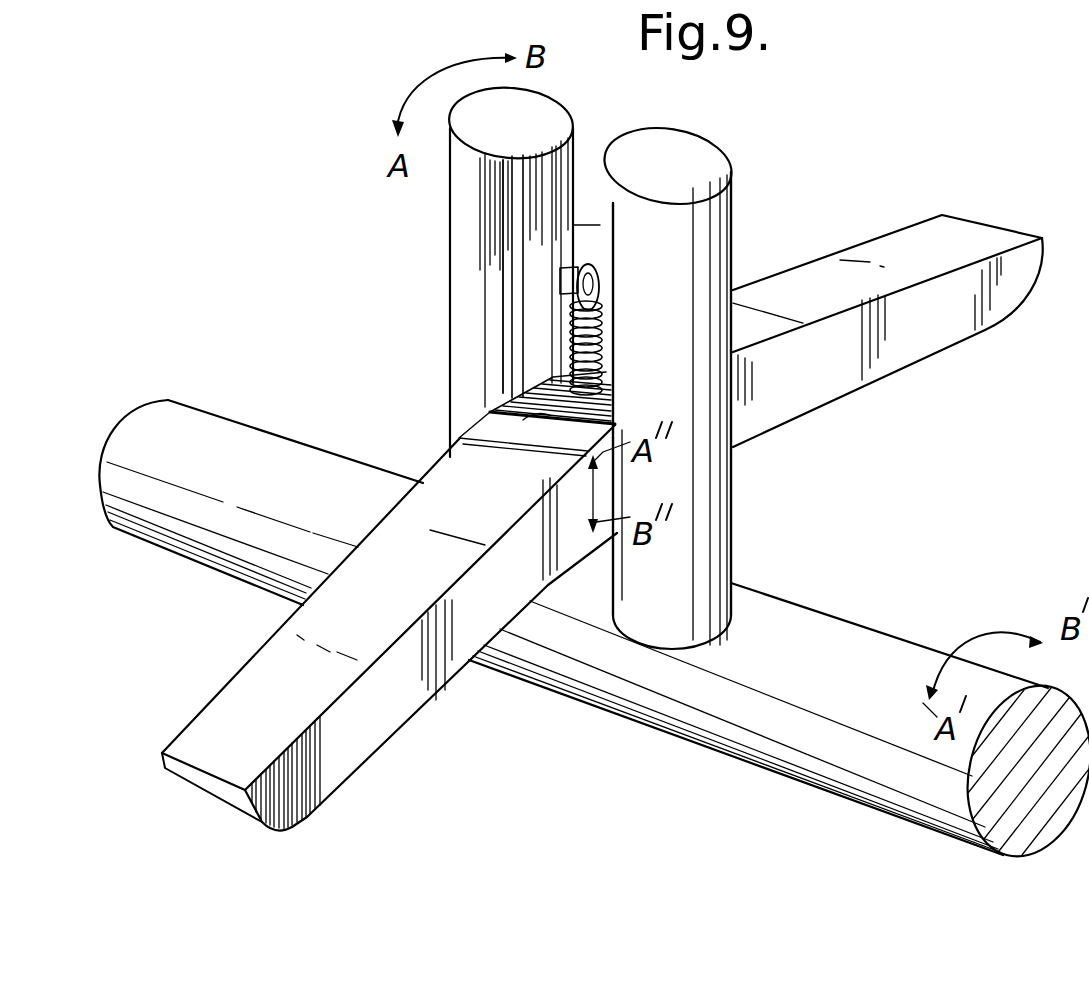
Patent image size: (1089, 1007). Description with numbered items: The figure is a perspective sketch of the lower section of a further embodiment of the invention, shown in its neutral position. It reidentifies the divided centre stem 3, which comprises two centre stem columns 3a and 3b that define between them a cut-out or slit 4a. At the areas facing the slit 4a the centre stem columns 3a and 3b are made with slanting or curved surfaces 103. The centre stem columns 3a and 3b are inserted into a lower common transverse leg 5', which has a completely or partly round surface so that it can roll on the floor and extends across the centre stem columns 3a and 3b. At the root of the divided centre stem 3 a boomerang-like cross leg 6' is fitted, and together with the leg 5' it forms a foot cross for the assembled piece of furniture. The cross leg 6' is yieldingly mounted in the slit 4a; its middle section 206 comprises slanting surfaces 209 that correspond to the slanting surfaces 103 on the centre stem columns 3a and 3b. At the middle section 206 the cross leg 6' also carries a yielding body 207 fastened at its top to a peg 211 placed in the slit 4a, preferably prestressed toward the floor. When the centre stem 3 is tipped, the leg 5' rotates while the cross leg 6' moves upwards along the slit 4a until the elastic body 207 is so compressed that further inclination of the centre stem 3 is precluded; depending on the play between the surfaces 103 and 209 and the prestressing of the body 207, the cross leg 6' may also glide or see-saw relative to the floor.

The divided centre stem 3 is at (573, 225).
The centre stem column 3a is at (472, 195).
The centre stem column 3b is at (718, 212).
The centre stem slit 4a is at (576, 222).
The slanting surfaces 103 is at (537, 310).
The middle section 206 is at (460, 438).
The yielding body 207 is at (748, 353).
The slanting surfaces 209 is at (488, 408).
The peg 211 is at (603, 283).
The lower common transverse leg 5' is at (594, 635).
The cross leg 6' is at (894, 316).